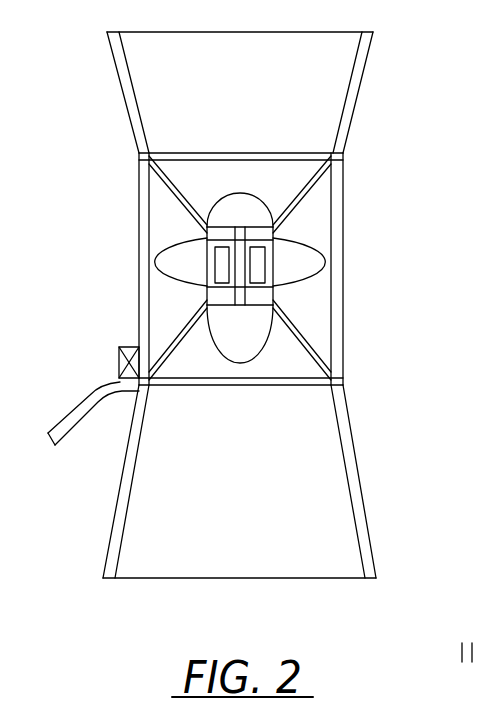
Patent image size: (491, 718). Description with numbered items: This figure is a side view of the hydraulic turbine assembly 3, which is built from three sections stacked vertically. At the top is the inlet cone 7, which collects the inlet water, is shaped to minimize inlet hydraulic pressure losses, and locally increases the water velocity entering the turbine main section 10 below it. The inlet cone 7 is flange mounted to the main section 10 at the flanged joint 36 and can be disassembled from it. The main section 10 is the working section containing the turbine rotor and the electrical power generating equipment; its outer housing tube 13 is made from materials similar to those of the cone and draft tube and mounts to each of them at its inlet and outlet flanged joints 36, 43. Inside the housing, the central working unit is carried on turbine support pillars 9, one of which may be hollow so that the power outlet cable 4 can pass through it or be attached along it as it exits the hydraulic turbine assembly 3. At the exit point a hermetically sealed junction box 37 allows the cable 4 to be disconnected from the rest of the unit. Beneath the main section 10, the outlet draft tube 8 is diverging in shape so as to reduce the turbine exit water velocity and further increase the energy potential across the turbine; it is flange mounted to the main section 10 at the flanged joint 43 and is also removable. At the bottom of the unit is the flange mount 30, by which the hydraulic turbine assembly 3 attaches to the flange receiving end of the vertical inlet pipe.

The hydraulic turbine assembly 3 is at (108, 82).
The inlet cone 7 is at (362, 85).
The flanged joint 36 is at (139, 157).
The outer housing tube 13 is at (139, 232).
The main section 10 is at (343, 240).
The flanged joint 43 is at (343, 380).
The turbine support pillar 9 is at (293, 323).
The hermetically sealed junction box 37 is at (119, 350).
The power outlet cable 4 is at (73, 427).
The outlet draft tube 8 is at (357, 463).
The flange mount 30 is at (367, 583).